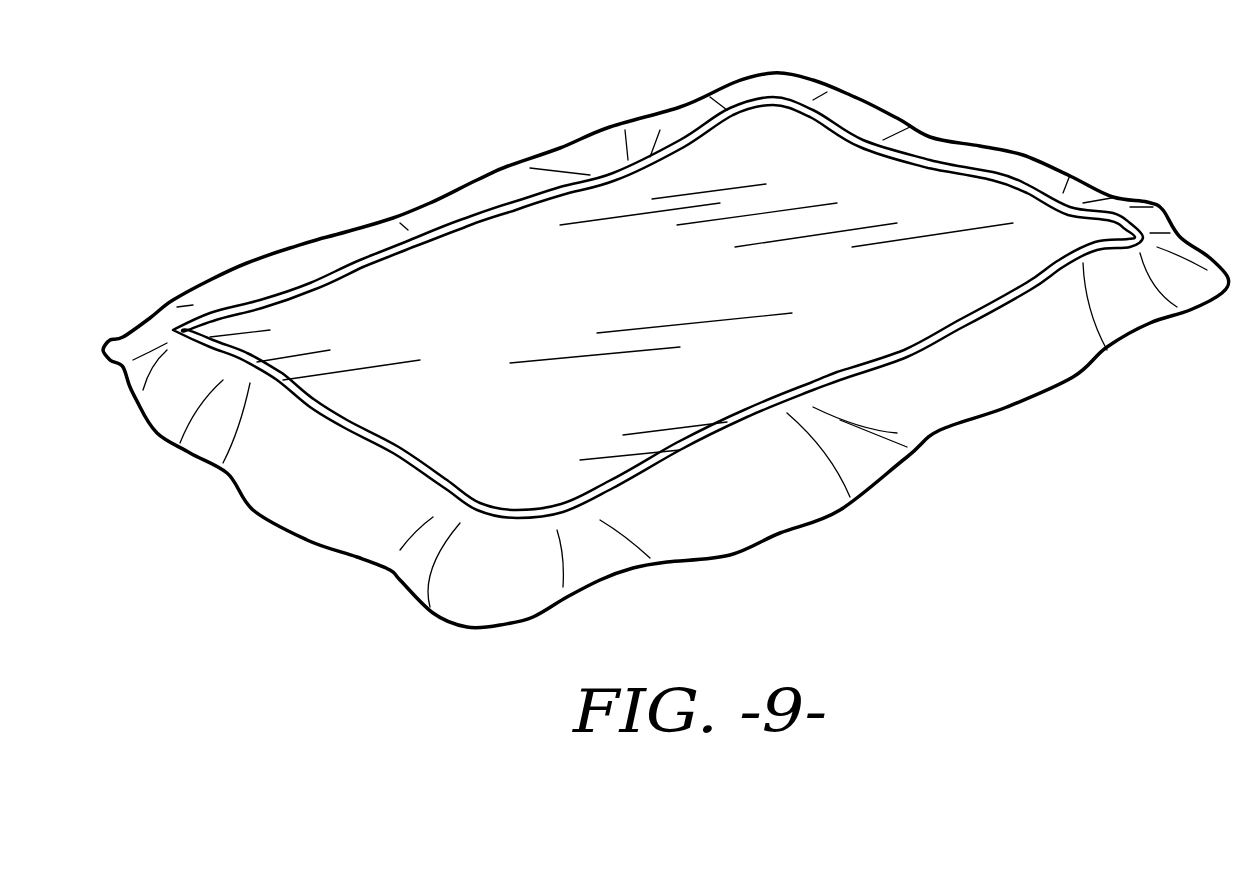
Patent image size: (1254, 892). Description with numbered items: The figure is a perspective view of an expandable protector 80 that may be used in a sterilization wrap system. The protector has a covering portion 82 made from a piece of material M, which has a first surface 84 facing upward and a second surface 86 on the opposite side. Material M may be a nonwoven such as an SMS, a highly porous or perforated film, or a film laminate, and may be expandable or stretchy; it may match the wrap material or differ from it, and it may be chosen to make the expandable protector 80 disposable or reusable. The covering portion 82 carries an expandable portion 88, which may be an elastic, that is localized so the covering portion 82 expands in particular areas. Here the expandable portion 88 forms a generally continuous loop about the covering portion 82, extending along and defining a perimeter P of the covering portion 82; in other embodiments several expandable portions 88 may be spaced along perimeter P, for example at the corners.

The expandable protector 80 is at (398, 90).
The covering portion 82 is at (290, 490).
The first surface 84 is at (409, 287).
The second surface 86 is at (758, 503).
The expandable portion 88 is at (853, 140).
The perimeter P is at (1022, 179).
The material M is at (1033, 363).